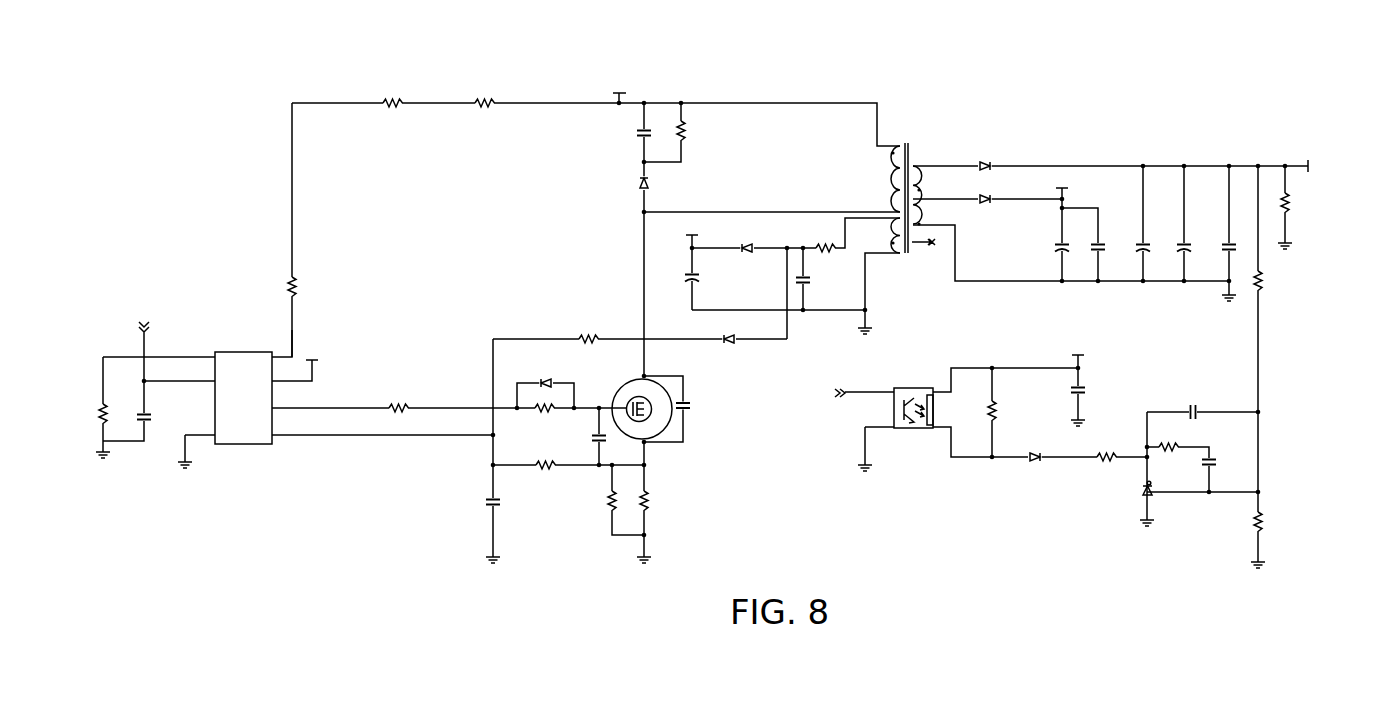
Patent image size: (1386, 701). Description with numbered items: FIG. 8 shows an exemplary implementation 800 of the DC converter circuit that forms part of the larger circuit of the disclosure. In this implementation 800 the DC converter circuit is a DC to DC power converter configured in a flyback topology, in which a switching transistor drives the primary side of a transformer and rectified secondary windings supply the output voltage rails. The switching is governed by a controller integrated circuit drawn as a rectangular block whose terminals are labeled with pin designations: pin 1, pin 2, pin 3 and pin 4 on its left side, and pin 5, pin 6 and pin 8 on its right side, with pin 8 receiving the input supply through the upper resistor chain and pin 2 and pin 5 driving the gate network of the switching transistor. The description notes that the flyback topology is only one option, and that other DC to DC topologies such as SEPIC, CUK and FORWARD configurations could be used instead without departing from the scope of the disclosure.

The exemplary implementation 800 is at (380, 75).
The controller pin 1 is at (179, 393).
The controller pin 2 is at (382, 421).
The controller pin 3 is at (159, 369).
The controller pin 4 is at (200, 433).
The controller pin 5 is at (326, 395).
The controller pin 6 is at (295, 370).
The controller pin 8 is at (282, 343).